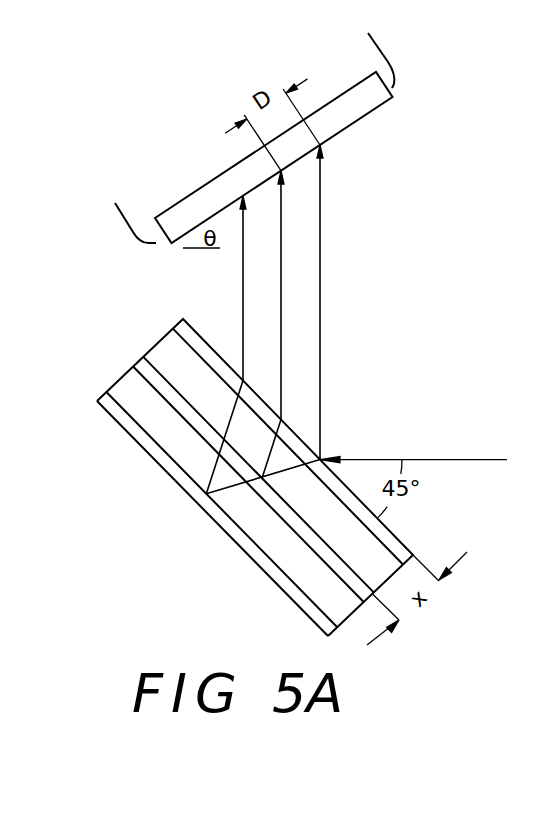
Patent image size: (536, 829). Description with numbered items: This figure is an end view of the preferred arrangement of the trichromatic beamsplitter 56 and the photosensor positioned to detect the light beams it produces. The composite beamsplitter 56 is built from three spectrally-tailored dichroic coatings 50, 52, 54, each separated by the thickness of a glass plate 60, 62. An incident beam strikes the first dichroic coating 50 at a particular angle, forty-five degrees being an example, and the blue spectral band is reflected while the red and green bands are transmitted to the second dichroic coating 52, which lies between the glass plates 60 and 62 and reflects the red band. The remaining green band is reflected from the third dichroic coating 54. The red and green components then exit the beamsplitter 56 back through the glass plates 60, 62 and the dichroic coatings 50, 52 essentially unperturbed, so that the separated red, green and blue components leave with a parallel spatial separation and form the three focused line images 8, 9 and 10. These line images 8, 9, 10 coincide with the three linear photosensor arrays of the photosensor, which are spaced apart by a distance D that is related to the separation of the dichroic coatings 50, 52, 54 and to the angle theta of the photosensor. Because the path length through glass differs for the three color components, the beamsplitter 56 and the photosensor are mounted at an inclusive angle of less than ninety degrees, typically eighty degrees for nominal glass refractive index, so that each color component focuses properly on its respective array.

The focused line image 8 is at (247, 243).
The focused line image 9 is at (283, 227).
The focused line image 10 is at (323, 203).
The dichroic coating 50 is at (134, 433).
The dichroic coating 52 is at (161, 387).
The dichroic coating 54 is at (193, 343).
The trichromatic beamsplitter 56 is at (183, 529).
The glass plate 60 is at (123, 380).
The glass plate 62 is at (155, 346).